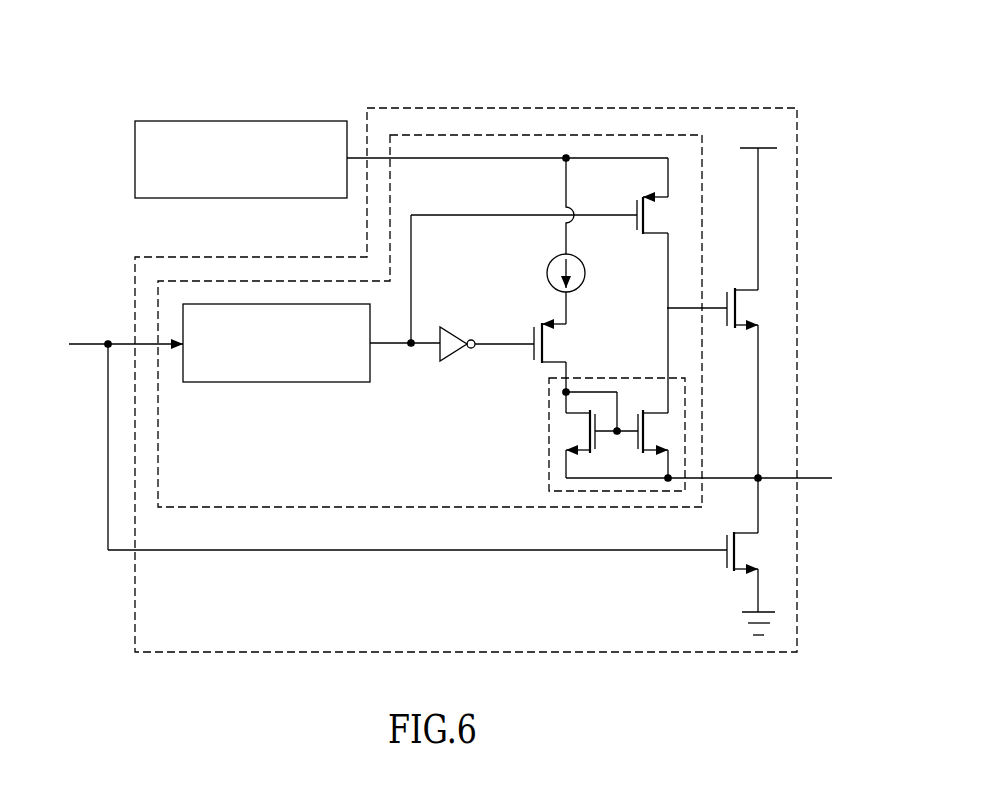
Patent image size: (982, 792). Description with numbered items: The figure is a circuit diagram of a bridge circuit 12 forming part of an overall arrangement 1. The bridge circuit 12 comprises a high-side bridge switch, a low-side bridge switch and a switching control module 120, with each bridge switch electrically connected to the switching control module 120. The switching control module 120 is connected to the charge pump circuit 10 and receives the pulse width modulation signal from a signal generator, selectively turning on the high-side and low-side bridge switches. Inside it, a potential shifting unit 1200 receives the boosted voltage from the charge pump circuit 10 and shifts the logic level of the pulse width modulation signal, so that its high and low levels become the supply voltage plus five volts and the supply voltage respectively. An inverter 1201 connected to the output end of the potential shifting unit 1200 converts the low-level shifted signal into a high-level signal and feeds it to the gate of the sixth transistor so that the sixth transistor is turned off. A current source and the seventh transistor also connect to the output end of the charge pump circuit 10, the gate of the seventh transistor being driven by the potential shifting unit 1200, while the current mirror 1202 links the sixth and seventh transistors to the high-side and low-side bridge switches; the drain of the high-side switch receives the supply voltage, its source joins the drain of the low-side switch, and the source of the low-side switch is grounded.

The power switching / driving system 1 is at (84, 30).
The charge pump circuit 10 is at (240, 121).
The bridge circuit 12 is at (590, 108).
The switching control module 120 is at (447, 134).
The potential shifting unit 1200 is at (275, 383).
The inverter 1201 is at (455, 323).
The current mirror 1202 is at (549, 445).